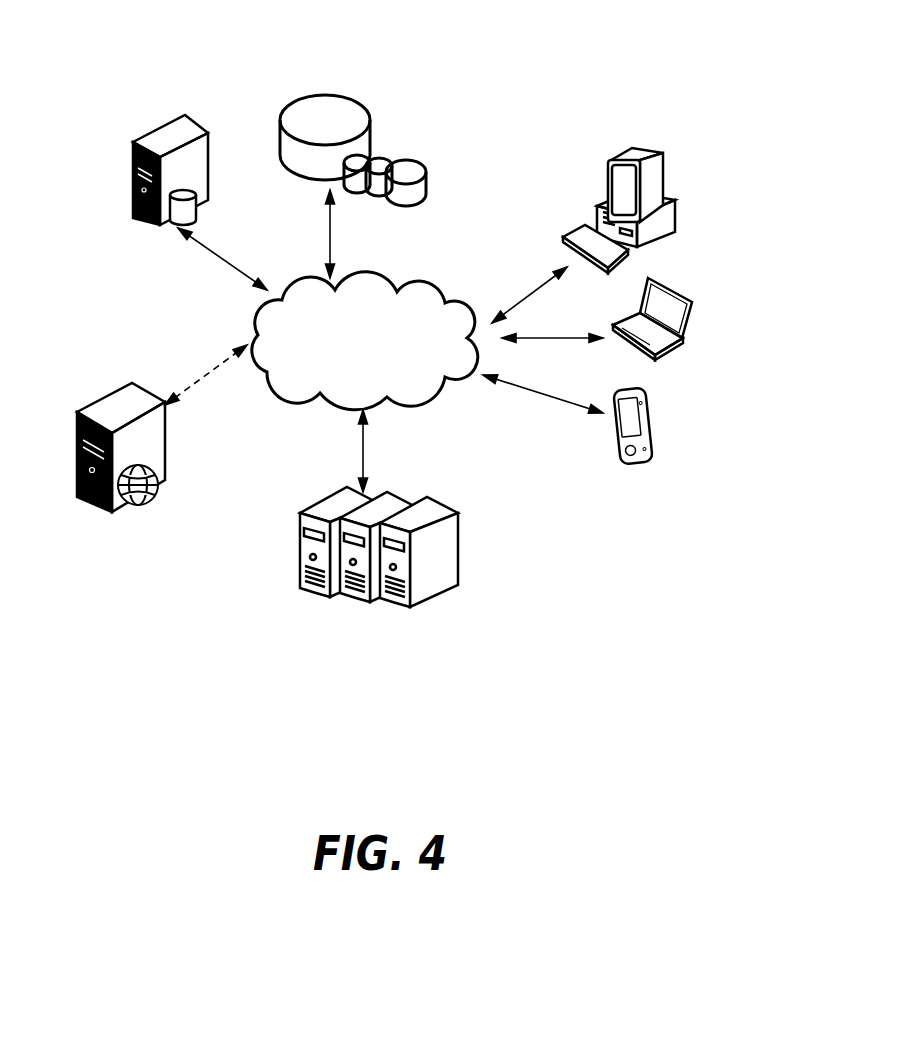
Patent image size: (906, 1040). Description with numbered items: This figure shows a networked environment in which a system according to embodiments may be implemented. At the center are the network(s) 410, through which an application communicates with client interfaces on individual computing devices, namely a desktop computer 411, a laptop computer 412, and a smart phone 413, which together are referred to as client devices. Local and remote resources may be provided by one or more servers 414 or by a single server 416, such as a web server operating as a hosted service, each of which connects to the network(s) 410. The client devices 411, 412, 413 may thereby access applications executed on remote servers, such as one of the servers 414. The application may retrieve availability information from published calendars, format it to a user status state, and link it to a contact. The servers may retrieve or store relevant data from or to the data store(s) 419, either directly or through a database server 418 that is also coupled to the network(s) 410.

The network(s) 410 is at (367, 265).
The desktop computer 411 is at (660, 150).
The laptop computer 412 is at (693, 278).
The smart phone 413 is at (665, 397).
The servers 414 is at (325, 493).
The single server 416 is at (98, 395).
The database server 418 is at (170, 230).
The data store(s) 419 is at (338, 70).